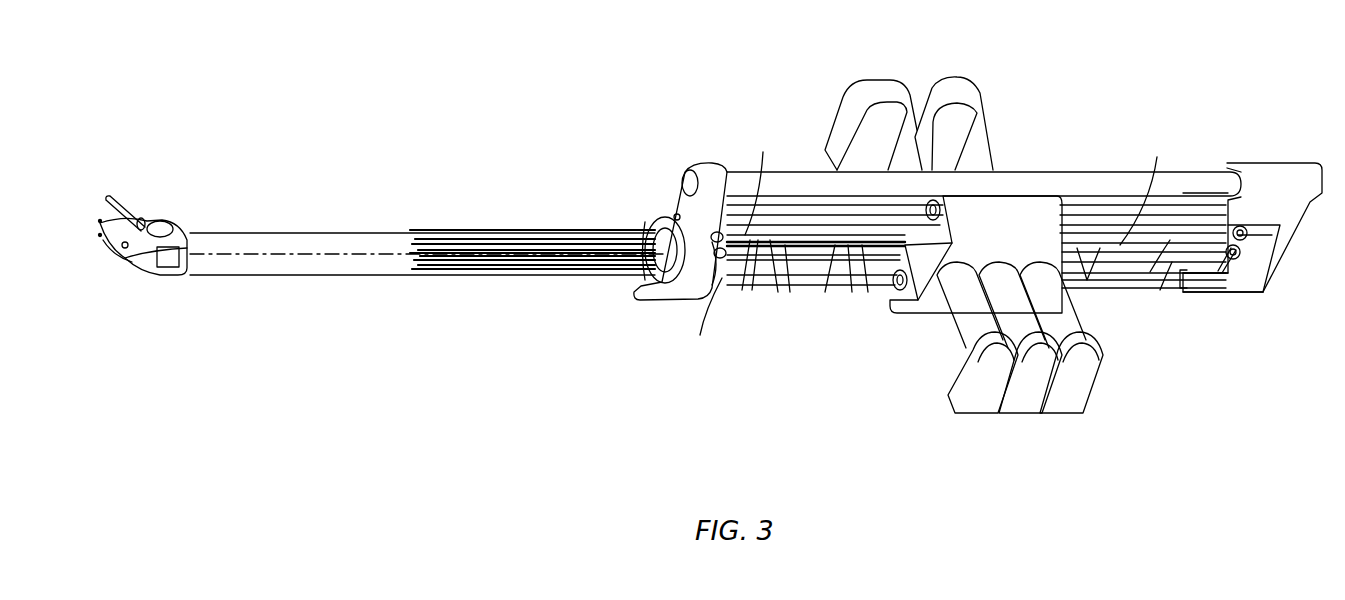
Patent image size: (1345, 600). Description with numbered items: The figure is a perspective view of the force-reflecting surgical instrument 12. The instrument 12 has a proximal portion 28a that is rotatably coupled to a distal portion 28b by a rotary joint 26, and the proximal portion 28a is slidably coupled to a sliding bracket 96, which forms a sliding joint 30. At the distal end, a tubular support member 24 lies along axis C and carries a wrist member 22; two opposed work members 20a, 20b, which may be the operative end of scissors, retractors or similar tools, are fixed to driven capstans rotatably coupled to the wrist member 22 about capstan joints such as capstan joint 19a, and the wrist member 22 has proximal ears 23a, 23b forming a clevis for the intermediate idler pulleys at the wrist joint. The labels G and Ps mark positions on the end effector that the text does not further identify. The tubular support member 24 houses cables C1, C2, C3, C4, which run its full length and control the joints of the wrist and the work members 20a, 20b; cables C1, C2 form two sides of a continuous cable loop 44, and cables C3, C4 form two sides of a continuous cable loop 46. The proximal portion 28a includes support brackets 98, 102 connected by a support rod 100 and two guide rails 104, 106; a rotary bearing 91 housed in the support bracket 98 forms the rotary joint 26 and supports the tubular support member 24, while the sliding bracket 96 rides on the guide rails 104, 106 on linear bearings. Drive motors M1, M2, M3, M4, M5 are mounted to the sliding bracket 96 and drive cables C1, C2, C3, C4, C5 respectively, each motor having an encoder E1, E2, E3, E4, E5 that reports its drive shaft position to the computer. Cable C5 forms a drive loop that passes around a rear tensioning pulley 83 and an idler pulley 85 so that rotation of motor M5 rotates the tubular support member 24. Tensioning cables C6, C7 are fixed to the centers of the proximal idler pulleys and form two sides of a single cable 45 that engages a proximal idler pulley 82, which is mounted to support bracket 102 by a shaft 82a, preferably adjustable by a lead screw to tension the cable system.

The instrument 12 is at (695, 82).
The distal portion 28b is at (290, 168).
The work member 20b is at (112, 200).
The grip point G is at (100, 221).
The wrist member 22 is at (139, 226).
The proximal ear 23b is at (170, 232).
The axis C- C is at (292, 252).
The tubular support member 24 is at (355, 235).
The pivot point Ps is at (100, 234).
The work member 20a is at (108, 245).
The capstan joint 19a is at (122, 250).
The proximal ear 23a is at (162, 278).
The rotary joint 26 is at (638, 230).
The rotary bearing 91 is at (652, 215).
The support bracket 98 is at (710, 165).
The cable C5 is at (925, 247).
The sliding joint 30 is at (885, 203).
The idler pulley 85 is at (698, 292).
The cable C1 is at (741, 245).
The cable C2 is at (760, 250).
The cable loop 44 is at (787, 245).
The cable C3 is at (831, 244).
The cable C4 is at (845, 250).
The cable loop 46 is at (876, 245).
The encoder E5 is at (889, 80).
The encoder E4 is at (955, 78).
The drive motor M5 is at (908, 149).
The drive motor M4 is at (971, 149).
The proximal portion 28a is at (1075, 125).
The sliding bracket 96 is at (1008, 205).
The support rod 100 is at (1100, 172).
The guide rail 104 is at (1190, 205).
The support bracket 102 is at (1302, 163).
The cable 45 is at (1087, 280).
The drive motor M3 is at (978, 312).
The drive motor M2 is at (1018, 312).
The drive motor M1 is at (1058, 312).
The encoder E3 is at (977, 413).
The encoder E2 is at (1018, 413).
The encoder E1 is at (1060, 413).
The cable C6 is at (1150, 272).
The cable C7 is at (1160, 290).
The guide rail 106 is at (1176, 280).
The rear tensioning pulley 83 is at (1249, 237).
The proximal idler pulley 82 is at (1243, 255).
The shaft 82a is at (1233, 272).